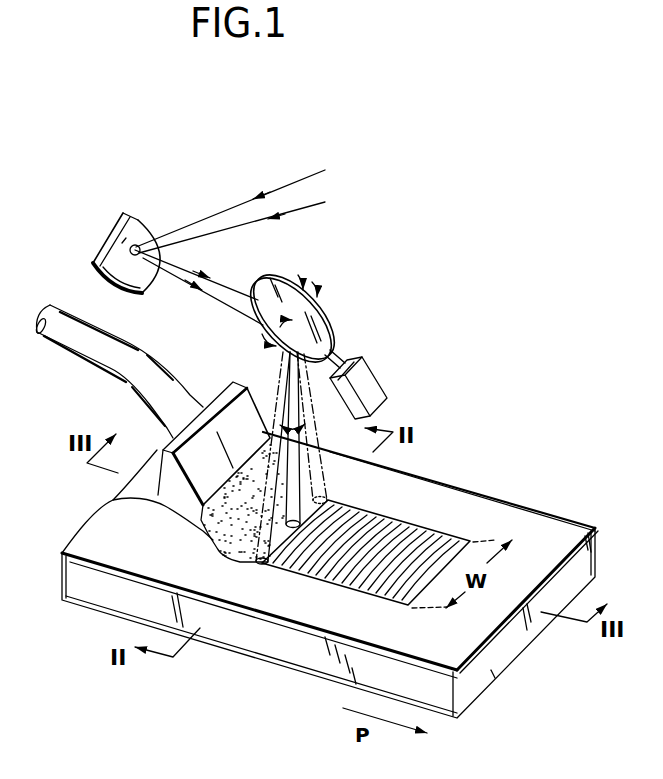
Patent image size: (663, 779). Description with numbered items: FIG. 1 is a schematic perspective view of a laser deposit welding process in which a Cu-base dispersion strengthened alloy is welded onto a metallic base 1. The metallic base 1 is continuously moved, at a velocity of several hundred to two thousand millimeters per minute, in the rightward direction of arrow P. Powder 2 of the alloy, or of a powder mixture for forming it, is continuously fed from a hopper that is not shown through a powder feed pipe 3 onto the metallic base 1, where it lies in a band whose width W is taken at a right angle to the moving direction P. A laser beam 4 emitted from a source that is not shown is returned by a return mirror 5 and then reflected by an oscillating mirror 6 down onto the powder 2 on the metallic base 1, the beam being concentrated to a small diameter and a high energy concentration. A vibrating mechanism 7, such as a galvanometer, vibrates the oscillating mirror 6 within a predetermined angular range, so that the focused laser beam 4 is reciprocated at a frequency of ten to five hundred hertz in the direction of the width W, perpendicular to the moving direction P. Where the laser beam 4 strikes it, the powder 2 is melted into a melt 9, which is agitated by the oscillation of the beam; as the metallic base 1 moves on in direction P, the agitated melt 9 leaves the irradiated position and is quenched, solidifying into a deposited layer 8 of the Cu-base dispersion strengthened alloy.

The metallic base 1 is at (487, 668).
The powder 2 is at (215, 528).
The powder feed pipe 3 is at (113, 500).
The laser beam 4 is at (225, 222).
The return mirror 5 is at (100, 249).
The oscillating mirror 6 is at (316, 314).
The vibrating mechanism 7 is at (370, 372).
The deposited layer 8 is at (433, 532).
The melt 9 is at (290, 540).